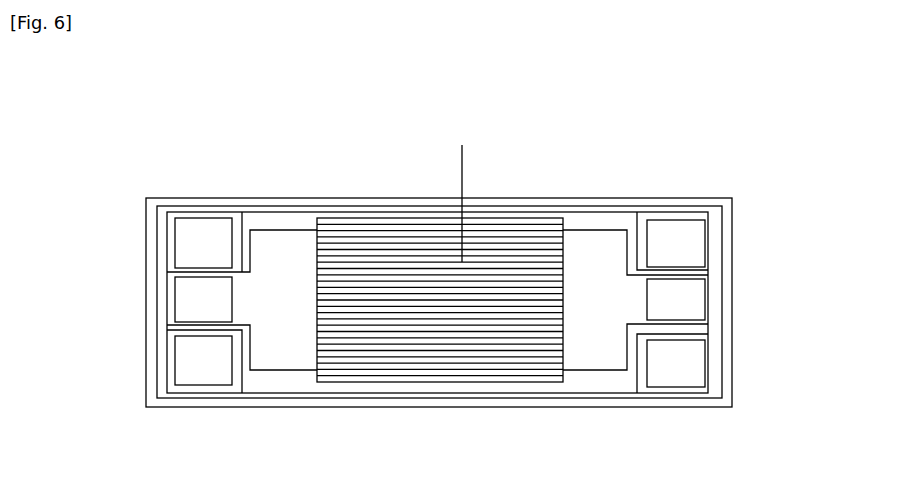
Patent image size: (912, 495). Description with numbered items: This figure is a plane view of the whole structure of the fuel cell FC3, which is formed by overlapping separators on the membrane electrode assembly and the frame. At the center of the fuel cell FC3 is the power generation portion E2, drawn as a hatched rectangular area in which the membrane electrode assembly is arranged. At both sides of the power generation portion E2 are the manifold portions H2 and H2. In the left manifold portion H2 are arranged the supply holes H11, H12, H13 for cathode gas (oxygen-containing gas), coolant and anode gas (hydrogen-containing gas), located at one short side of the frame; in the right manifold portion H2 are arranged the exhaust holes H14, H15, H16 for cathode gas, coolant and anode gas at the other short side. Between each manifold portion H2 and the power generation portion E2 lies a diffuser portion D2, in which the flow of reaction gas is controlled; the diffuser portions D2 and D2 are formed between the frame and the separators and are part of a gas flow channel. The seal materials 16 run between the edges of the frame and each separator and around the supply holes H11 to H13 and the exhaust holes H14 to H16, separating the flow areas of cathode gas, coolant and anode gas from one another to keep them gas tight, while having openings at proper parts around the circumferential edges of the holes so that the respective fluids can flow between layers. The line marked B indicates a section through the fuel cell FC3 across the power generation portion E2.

The fuel cell FC3 is at (302, 192).
The seal material 16 is at (247, 206).
The supply hole H11 is at (183, 242).
The supply hole H12 is at (183, 301).
The supply hole H13 is at (183, 360).
The exhaust hole H14 is at (687, 238).
The exhaust hole H15 is at (687, 301).
The exhaust hole H16 is at (687, 368).
The section line B is at (523, 153).
The manifold portion H2 is at (232, 425).
The diffuser portion D2 is at (317, 425).
The power generation portion E2 is at (562, 425).